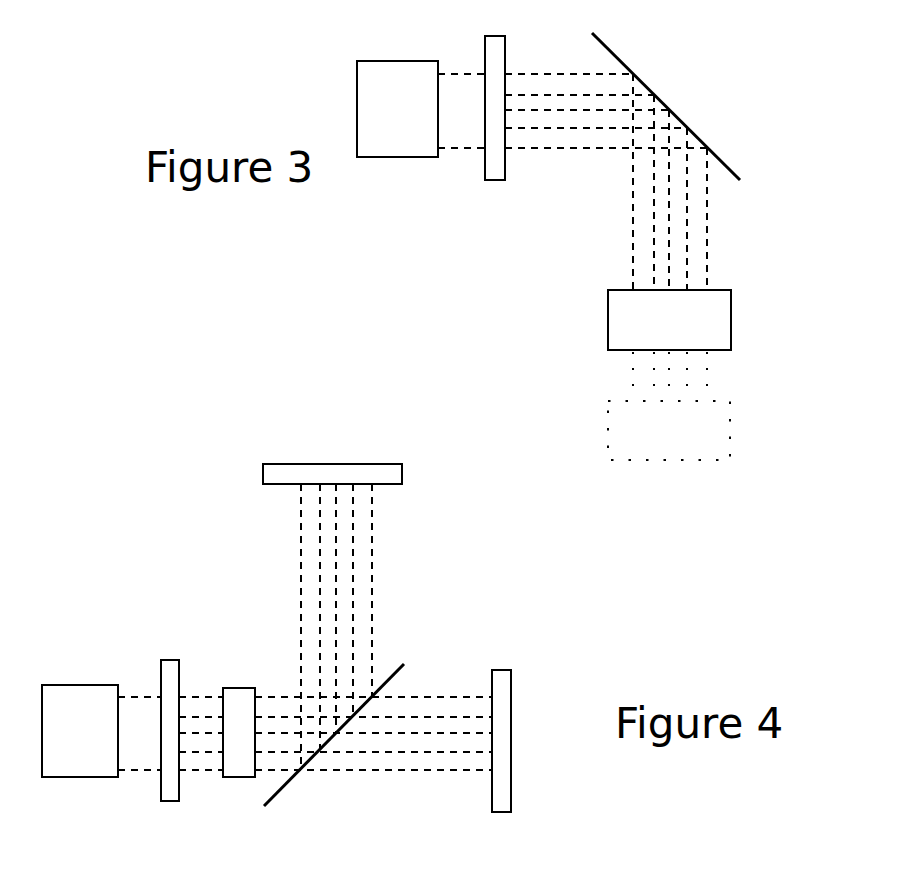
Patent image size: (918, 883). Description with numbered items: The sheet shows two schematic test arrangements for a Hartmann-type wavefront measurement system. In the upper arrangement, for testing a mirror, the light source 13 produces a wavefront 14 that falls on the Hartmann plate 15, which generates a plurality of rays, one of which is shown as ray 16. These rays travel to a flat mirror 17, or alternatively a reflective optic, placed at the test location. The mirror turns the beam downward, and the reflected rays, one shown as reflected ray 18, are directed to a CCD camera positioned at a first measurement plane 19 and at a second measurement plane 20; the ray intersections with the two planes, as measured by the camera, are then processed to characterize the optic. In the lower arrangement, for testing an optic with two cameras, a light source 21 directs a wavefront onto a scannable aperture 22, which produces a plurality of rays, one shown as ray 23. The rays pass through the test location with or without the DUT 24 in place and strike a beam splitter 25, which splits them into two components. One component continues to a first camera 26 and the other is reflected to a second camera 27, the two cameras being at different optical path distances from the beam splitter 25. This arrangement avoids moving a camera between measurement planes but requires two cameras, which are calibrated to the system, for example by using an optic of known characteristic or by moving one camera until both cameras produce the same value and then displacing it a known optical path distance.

In FIG. 3, the light source 13 is at (400, 62).
In FIG. 3, the wavefront 14 is at (463, 73).
In FIG. 3, the Hartmann plate 15 is at (490, 180).
In FIG. 3, the ray 16 is at (555, 73).
In FIG. 3, the flat mirror 17 is at (727, 163).
In FIG. 3, the reflected ray 18 is at (632, 248).
In FIG. 3, the first measurement plane 19 is at (609, 323).
In FIG. 3, the second measurement plane 20 is at (607, 415).
In FIG. 4, the light source 21 is at (70, 685).
In FIG. 4, the scannable aperture 22 is at (172, 660).
In FIG. 4, the ray 23 is at (196, 697).
In FIG. 4, the DUT 24 is at (235, 778).
In FIG. 4, the beam splitter 25 is at (290, 782).
In FIG. 4, the first camera 26 is at (345, 463).
In FIG. 4, the second camera 27 is at (512, 687).